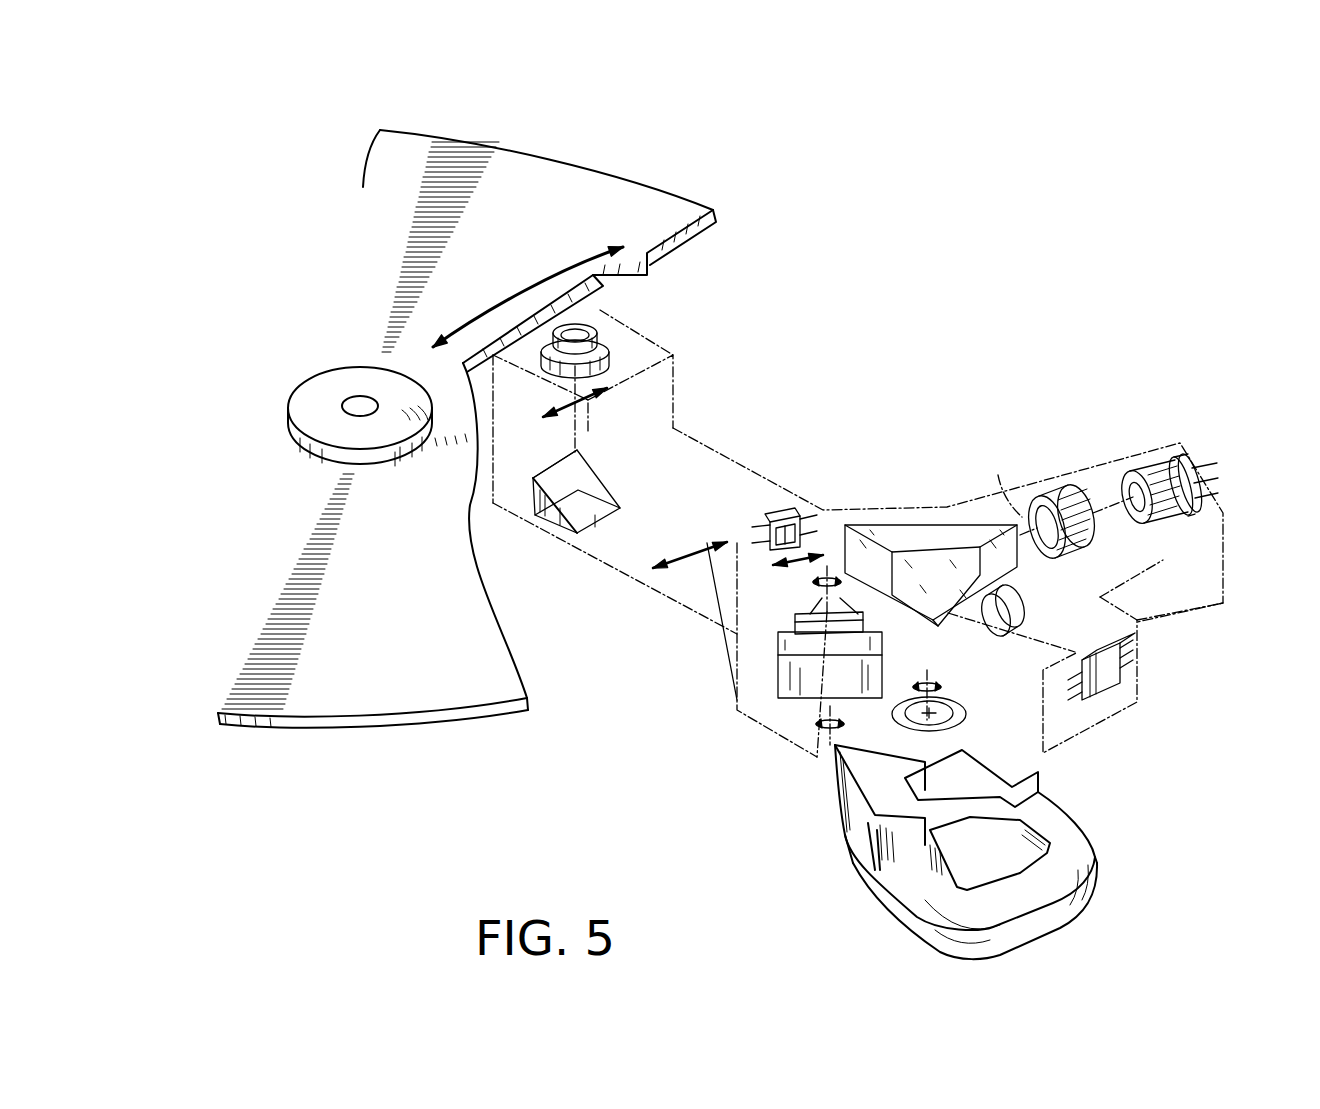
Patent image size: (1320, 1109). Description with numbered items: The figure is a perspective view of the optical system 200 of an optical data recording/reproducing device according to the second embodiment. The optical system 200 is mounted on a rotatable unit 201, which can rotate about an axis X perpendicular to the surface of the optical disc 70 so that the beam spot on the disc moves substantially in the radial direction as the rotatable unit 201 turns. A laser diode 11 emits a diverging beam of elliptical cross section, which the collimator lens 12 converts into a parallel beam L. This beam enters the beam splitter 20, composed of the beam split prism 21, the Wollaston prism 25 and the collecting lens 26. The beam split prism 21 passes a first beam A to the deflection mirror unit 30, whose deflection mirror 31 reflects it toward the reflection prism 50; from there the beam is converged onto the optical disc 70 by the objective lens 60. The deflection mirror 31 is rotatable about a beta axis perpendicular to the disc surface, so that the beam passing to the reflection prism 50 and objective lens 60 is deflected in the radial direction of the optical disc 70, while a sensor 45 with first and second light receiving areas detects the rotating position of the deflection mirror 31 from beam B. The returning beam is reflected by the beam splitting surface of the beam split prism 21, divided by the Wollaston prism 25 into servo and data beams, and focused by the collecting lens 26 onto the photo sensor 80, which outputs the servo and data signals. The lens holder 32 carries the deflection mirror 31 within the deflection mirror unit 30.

The laser diode 11 is at (1155, 468).
The collimator lens 12 is at (1060, 495).
The beam splitter 20 is at (931, 526).
The beam split prism 21 is at (943, 533).
The Wollaston prism 25 is at (955, 621).
The collecting lens 26 is at (1008, 607).
The deflection mirror unit 30 is at (873, 716).
The deflection mirror 31 is at (796, 620).
The lens holder 32 is at (800, 688).
The sensor 45 is at (770, 511).
The reflection prism 50 is at (538, 516).
The objective lens 60 is at (613, 331).
The optical disc 70 is at (667, 226).
The photo sensor 80 is at (1110, 675).
The optical system 200 is at (1011, 366).
The rotatable unit 201 is at (1168, 605).